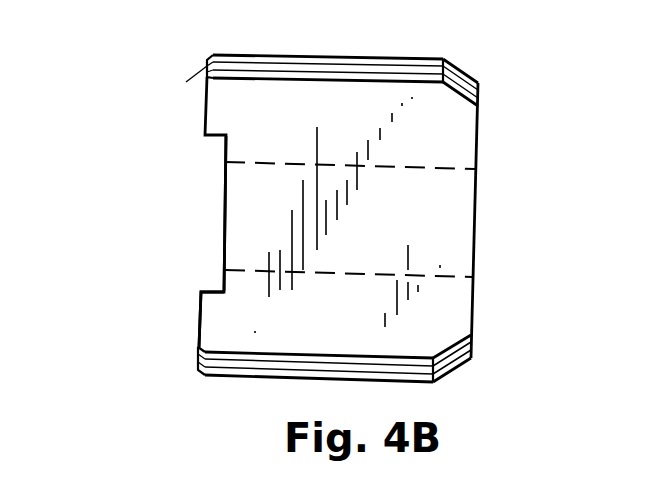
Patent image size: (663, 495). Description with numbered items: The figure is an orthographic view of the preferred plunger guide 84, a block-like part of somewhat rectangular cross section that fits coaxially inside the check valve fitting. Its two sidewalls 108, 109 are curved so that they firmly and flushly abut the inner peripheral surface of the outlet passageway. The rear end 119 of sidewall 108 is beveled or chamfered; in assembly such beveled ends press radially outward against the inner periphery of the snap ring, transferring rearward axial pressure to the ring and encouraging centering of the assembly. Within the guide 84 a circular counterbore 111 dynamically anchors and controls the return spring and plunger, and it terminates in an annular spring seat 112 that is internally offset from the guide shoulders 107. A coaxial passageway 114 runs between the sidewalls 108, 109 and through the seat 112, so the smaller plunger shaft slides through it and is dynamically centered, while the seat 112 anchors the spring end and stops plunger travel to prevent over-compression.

The plunger guide 84 is at (513, 212).
The sidewall 108 is at (254, 53).
The rear end of sidewall 119 is at (462, 72).
The sidewall 109 is at (248, 381).
The counterbore 111 is at (224, 161).
The coaxial passageway 114 is at (237, 203).
The annular seat 112 is at (225, 255).
The guide shoulders 107 is at (198, 318).